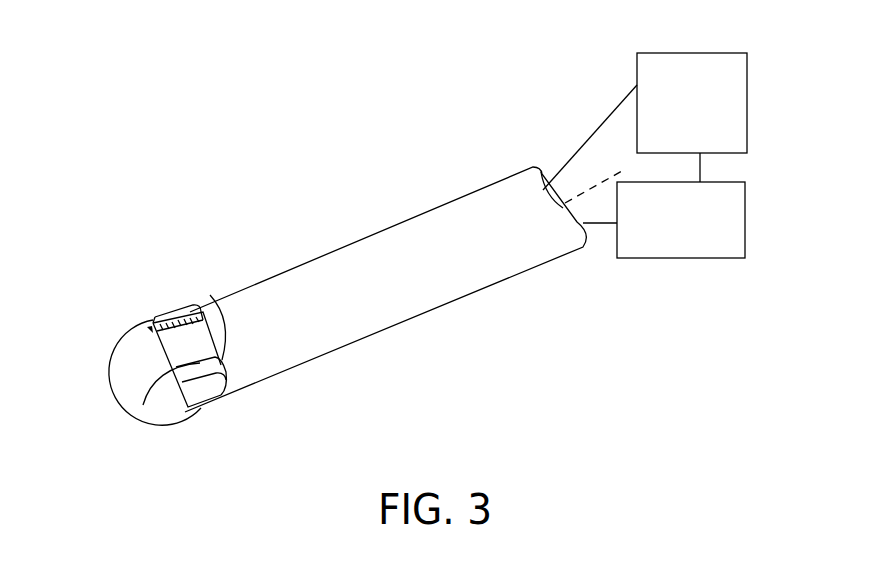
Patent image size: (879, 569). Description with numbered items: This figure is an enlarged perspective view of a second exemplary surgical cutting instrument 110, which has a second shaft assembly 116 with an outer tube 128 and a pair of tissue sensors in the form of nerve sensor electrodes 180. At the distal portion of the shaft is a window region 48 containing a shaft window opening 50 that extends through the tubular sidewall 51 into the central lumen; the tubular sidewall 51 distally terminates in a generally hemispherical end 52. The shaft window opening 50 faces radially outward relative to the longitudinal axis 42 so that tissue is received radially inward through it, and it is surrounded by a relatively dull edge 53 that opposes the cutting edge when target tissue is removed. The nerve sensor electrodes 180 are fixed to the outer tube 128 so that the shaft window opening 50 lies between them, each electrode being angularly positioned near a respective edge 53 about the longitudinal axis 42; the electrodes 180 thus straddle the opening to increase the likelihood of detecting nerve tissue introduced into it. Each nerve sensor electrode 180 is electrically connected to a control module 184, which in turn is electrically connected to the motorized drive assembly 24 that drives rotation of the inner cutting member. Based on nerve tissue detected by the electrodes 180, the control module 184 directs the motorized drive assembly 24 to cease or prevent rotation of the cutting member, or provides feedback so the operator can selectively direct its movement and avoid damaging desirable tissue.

The second exemplary surgical cutting instrument 110 is at (233, 88).
The second shaft assembly 116 is at (256, 186).
The outer tube 128 is at (413, 218).
The tubular sidewall 51 is at (338, 287).
The shaft window opening 50 is at (198, 345).
The nerve sensor electrode 180 is at (177, 312).
The window region 48 is at (150, 330).
The generally hemispherical end 52 is at (138, 370).
The edge 53 is at (167, 370).
The longitudinal axis 42 is at (585, 190).
The motorized drive assembly 24 is at (715, 53).
The control module 184 is at (747, 222).